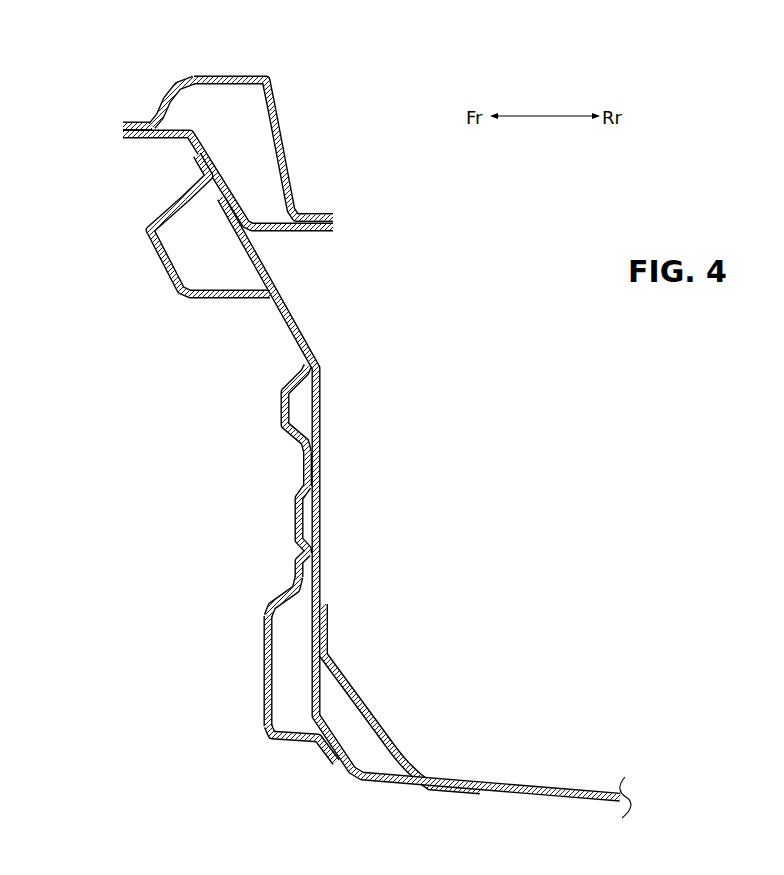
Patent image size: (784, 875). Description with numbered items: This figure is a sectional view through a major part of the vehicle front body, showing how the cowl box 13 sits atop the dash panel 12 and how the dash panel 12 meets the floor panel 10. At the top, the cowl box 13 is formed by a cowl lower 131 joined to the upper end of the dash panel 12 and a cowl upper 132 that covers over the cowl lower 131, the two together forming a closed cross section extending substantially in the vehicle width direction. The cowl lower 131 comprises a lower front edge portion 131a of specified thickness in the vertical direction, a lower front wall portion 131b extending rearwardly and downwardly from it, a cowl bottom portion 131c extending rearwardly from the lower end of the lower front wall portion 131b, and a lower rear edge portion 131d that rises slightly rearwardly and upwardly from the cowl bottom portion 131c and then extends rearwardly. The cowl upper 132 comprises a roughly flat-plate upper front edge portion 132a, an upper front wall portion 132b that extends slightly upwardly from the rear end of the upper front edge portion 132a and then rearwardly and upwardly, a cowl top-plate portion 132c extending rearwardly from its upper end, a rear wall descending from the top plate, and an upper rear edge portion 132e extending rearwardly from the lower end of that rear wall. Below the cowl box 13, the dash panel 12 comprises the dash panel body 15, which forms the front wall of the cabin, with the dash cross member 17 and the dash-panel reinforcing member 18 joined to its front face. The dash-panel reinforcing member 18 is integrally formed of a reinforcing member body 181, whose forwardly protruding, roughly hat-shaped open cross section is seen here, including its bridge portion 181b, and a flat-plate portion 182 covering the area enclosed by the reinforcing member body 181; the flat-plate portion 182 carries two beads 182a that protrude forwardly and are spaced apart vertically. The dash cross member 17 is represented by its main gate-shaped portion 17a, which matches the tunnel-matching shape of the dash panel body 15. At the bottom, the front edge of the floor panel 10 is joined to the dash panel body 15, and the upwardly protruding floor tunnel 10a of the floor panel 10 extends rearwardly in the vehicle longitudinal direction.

The floor panel 10 is at (525, 755).
The floor tunnel 10a is at (573, 786).
The dash panel 12 is at (272, 472).
The cowl box 13 is at (230, 167).
The dash panel body 15 is at (322, 408).
The dash cross member 17 is at (205, 669).
The main gate-shaped portion 17a is at (282, 656).
The dash-panel reinforcing member 18 is at (145, 272).
The reinforcing member body 181 is at (145, 224).
The bridge portion 181b is at (176, 297).
The flat-plate portion 182 is at (246, 471).
The beads 182a is at (282, 405).
The cowl lower 131 is at (217, 201).
The lower front edge portion 131a is at (152, 142).
The lower front wall portion 131b is at (225, 168).
The cowl bottom portion 131c is at (270, 235).
The lower rear edge portion 131d is at (318, 231).
The cowl upper 132 is at (230, 131).
The upper front edge portion 132a is at (140, 121).
The upper front wall portion 132b is at (170, 86).
The cowl top-plate portion 132c is at (237, 74).
The upper rear edge portion 132e is at (330, 210).